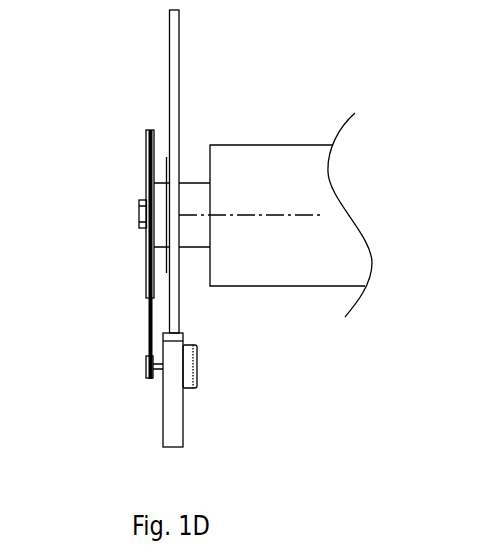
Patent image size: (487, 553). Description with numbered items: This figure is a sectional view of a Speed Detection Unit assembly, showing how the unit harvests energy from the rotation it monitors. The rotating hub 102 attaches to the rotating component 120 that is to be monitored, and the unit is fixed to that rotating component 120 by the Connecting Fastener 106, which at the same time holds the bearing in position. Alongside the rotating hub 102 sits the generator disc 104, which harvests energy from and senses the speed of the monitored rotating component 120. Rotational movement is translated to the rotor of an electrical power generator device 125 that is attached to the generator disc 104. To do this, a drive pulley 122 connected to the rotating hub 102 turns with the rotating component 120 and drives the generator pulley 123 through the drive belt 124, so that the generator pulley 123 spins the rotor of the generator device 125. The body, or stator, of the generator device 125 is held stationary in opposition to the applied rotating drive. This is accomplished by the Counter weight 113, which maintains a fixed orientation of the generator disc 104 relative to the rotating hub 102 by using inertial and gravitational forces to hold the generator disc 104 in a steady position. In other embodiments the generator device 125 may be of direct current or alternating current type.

The generator disc 104 is at (168, 13).
The rotating hub 102 is at (191, 180).
The rotating component 120 is at (303, 289).
The Connecting Fastener 106 is at (138, 214).
The drive pulley 122 is at (146, 280).
The drive belt 124 is at (147, 325).
The generator pulley 123 is at (144, 363).
The electrical power generator device 125 is at (197, 359).
The Counter weight 113 is at (193, 447).